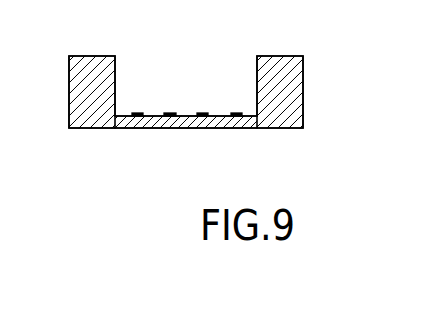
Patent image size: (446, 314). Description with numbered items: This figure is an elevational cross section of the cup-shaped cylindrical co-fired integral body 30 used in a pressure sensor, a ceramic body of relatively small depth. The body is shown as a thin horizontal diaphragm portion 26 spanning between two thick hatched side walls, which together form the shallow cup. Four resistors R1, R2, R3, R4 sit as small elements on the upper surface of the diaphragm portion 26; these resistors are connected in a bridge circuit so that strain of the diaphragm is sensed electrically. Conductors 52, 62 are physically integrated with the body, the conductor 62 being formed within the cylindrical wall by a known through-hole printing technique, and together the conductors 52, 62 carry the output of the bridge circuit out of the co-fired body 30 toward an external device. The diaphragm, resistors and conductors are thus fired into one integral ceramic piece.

The co-fired integral body 30 is at (310, 65).
The conductor 62 is at (90, 87).
The conductor 52 is at (262, 128).
The diaphragm portion 26 is at (152, 128).
The resistor R1 is at (136, 113).
The resistor R2 is at (170, 113).
The resistor R3 is at (202, 113).
The resistor R4 is at (235, 113).